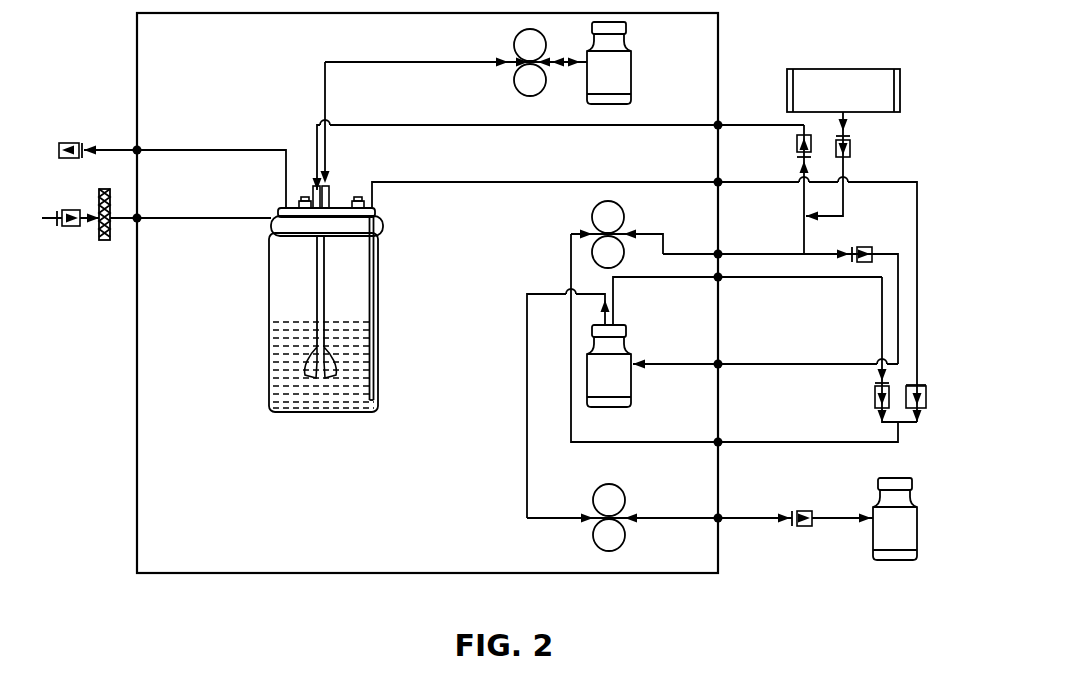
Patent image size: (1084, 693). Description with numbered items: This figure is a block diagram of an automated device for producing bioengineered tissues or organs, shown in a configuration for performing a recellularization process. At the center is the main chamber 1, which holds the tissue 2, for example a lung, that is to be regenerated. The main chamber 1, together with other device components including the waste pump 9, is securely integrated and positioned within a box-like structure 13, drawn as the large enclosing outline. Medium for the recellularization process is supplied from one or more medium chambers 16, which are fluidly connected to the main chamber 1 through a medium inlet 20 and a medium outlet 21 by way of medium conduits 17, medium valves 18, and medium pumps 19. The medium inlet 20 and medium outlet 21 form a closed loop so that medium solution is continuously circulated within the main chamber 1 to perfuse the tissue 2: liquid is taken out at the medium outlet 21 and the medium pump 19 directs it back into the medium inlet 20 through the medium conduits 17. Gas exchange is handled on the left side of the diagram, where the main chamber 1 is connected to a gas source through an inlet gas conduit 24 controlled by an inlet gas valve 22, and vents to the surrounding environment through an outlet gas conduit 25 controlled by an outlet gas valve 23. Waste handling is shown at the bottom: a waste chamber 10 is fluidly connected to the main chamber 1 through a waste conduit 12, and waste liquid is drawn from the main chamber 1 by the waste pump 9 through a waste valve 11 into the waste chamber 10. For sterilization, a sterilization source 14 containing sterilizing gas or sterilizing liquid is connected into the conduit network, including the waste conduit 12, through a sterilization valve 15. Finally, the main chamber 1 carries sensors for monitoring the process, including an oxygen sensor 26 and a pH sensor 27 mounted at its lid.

The main chamber 1 is at (268, 305).
The tissue 2 is at (325, 385).
The waste pump 9 is at (593, 535).
The waste chamber 10 is at (920, 530).
The waste valve 11 is at (805, 511).
The waste conduit 12 is at (752, 518).
The box-like structure 13 is at (137, 27).
The sterilization source 14 is at (858, 69).
The sterilization valve 15 is at (850, 148).
The medium chamber 16 is at (632, 75).
The medium conduit 17 is at (527, 350).
The medium valve 18 is at (866, 247).
The medium pump 19 is at (514, 45).
The medium inlet 20 is at (372, 125).
The medium outlet 21 is at (412, 183).
The inlet gas valve 22 is at (70, 228).
The outlet gas valve 23 is at (67, 143).
The inlet gas conduit 24 is at (225, 218).
The outlet gas conduit 25 is at (208, 150).
The oxygen sensor 26 is at (304, 200).
The pH sensor 27 is at (358, 200).